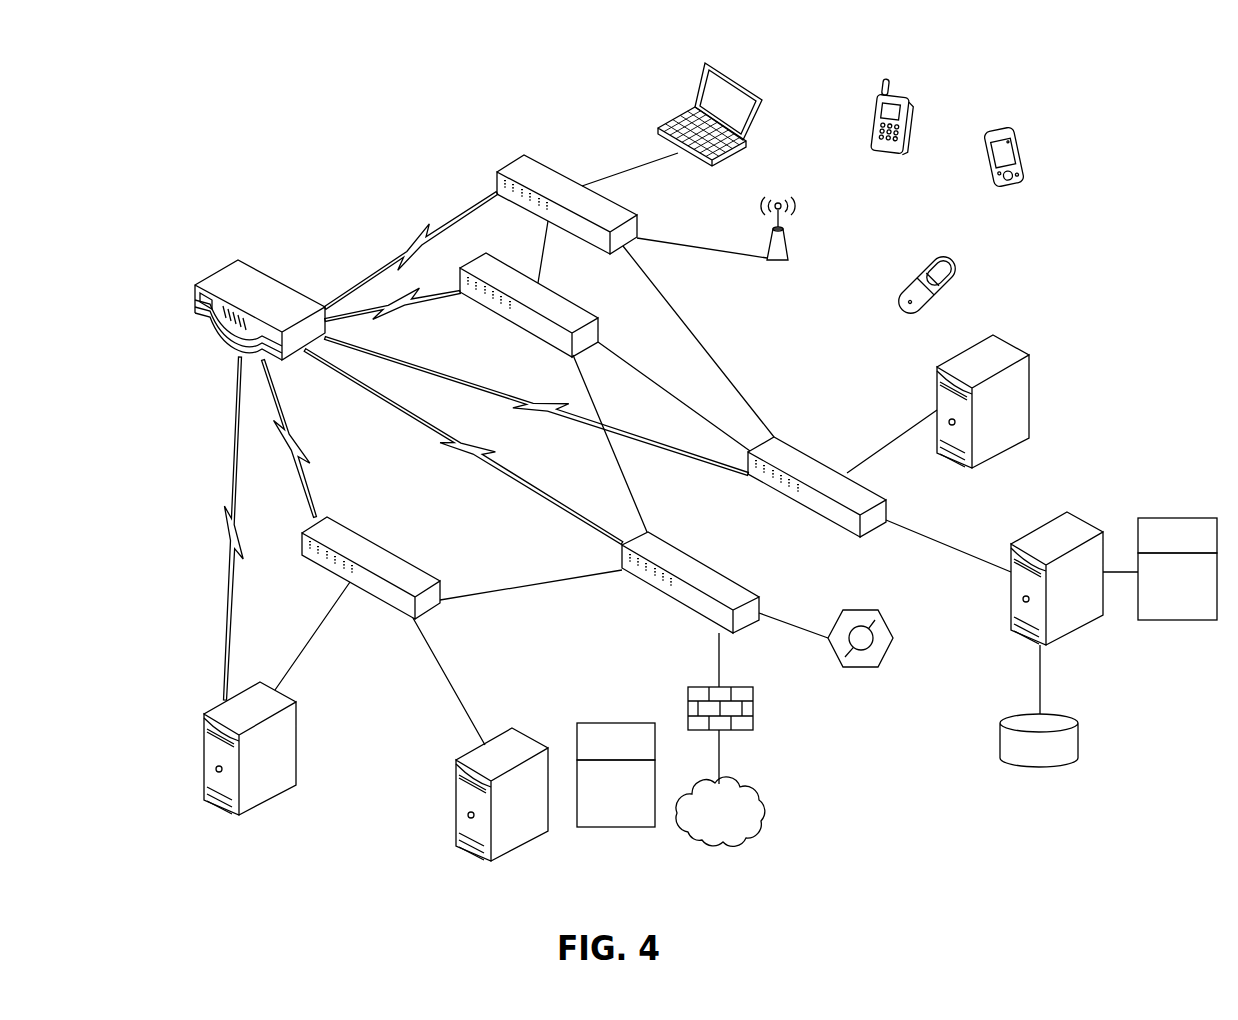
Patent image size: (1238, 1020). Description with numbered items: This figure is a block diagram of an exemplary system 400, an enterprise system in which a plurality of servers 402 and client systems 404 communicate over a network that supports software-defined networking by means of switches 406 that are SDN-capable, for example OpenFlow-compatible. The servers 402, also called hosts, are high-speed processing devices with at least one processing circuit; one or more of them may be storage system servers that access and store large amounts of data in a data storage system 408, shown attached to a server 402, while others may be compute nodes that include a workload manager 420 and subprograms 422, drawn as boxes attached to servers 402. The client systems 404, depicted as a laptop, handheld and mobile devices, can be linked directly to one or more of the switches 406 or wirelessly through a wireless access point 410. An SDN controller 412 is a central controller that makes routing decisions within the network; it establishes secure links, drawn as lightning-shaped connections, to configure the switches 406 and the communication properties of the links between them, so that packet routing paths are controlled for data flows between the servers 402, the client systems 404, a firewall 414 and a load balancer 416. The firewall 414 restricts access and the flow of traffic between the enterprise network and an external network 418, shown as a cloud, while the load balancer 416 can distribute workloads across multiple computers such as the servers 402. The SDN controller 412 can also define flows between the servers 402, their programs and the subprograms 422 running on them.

The system 400 is at (124, 93).
The server 402 is at (1010, 343).
The client system 404 is at (747, 87).
The switch 406 is at (543, 161).
The data storage system 408 is at (1063, 716).
The wireless access point 410 is at (788, 249).
The SDN controller 412 is at (288, 283).
The firewall 414 is at (738, 687).
The load balancer 416 is at (868, 609).
The external network 418 is at (738, 784).
The workload manager 420 is at (630, 723).
The subprogram 422 is at (628, 828).